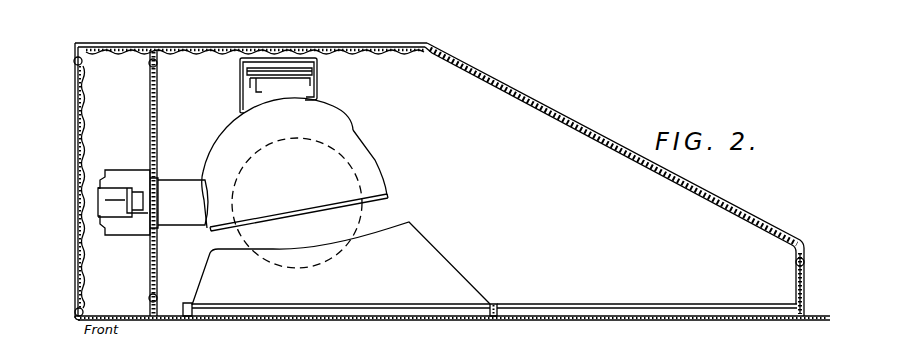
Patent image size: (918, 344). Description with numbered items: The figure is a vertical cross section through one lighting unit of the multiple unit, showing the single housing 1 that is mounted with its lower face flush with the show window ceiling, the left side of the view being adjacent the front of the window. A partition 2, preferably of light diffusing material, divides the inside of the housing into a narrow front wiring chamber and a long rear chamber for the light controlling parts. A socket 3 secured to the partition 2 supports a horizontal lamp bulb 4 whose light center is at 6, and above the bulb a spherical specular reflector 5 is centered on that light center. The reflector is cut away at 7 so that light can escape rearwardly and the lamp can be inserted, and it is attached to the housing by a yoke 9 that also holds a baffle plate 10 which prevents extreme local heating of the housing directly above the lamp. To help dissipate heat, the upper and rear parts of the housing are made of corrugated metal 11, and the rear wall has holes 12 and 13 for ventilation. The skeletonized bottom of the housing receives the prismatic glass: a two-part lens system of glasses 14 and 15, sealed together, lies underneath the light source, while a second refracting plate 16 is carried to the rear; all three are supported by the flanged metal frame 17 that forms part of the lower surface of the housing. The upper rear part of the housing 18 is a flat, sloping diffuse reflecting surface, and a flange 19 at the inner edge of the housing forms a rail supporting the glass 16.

The housing 1 is at (80, 44).
The partition 2 is at (149, 90).
The socket 3 is at (125, 170).
The lamp bulb 4 is at (180, 180).
The spherical specular reflector 5 is at (333, 108).
The light center 6 is at (297, 204).
The cut away portion of reflector 7 is at (375, 166).
The yoke 9 is at (318, 70).
The baffle plate 10 is at (250, 71).
The corrugated metal 11 is at (76, 128).
The ventilation hole 12 is at (77, 302).
The ventilation hole 13 is at (98, 47).
The lens glass 14 is at (437, 251).
The lens glass 15 is at (336, 312).
The refracting plate 16 is at (624, 310).
The flanged metal frame 17 is at (494, 314).
The upper rear part of housing 18 is at (613, 150).
The flange 19 is at (822, 314).